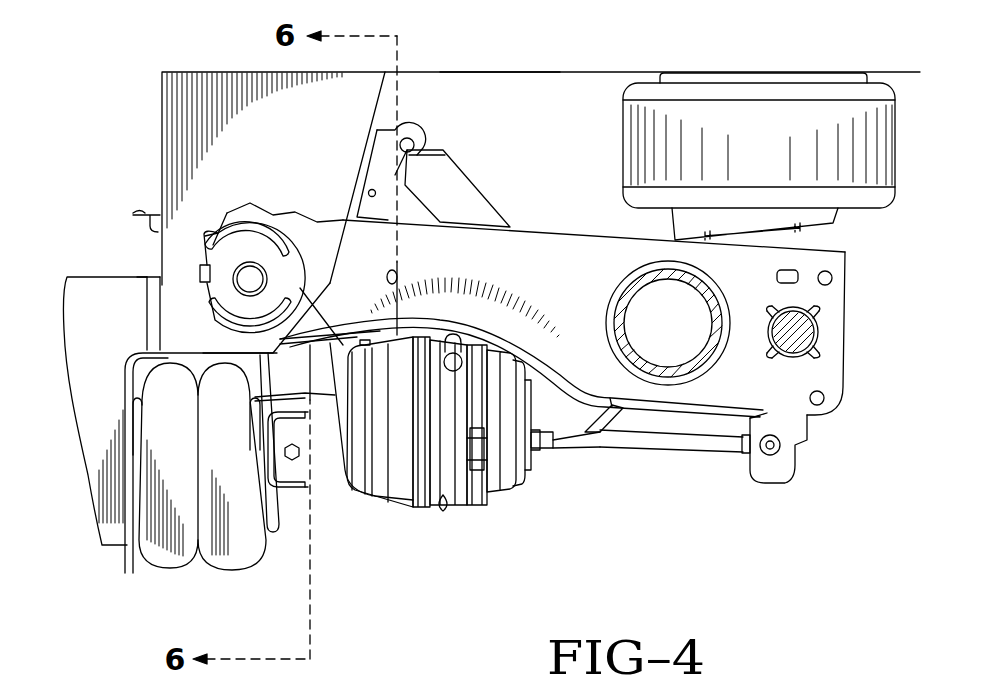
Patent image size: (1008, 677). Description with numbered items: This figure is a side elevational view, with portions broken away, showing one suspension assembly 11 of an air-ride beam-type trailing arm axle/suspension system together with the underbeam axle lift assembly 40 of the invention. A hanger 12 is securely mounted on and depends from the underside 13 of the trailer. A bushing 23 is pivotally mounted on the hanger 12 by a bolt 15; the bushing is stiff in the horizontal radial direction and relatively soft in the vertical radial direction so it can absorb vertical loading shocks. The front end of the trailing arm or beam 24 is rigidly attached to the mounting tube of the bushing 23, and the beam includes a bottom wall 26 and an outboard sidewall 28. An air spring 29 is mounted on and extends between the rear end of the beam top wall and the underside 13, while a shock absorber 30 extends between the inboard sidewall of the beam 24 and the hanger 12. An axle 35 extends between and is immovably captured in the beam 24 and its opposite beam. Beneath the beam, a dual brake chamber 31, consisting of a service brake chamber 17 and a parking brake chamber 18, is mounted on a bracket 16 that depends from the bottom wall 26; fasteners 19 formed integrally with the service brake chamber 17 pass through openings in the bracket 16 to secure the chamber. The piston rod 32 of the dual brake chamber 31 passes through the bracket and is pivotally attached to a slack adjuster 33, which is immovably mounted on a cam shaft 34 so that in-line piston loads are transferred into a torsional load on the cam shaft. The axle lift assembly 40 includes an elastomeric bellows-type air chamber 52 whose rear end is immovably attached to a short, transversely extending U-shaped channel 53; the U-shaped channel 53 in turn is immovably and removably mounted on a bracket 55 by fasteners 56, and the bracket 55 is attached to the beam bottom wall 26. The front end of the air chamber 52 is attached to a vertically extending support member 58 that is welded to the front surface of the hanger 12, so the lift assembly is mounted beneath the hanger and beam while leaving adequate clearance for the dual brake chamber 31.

The suspension assembly 11 is at (548, 206).
The hanger 12 is at (289, 169).
The underside 13 is at (481, 71).
The bolt 15 is at (247, 280).
The bracket 16 is at (567, 433).
The service brake chamber 17 is at (495, 487).
The parking brake chamber 18 is at (383, 487).
The fasteners 19 is at (533, 467).
The bushing 23 is at (301, 288).
The beam 24 is at (838, 387).
The bottom wall 26 is at (630, 407).
The outboard sidewall 28 is at (574, 304).
The air spring 29 is at (761, 134).
The shock absorber 30 is at (443, 190).
The dual brake chamber 31 is at (467, 510).
The piston rod 32 is at (663, 440).
The slack adjuster 33 is at (767, 463).
The cam shaft 34 is at (793, 332).
The axle 35 is at (677, 370).
The axle lift assembly 40 is at (125, 584).
The air chamber 52 is at (157, 560).
The U-shaped channel 53 is at (288, 488).
The bracket 55 is at (318, 443).
The fasteners 56 is at (293, 457).
The support member 58 is at (97, 433).